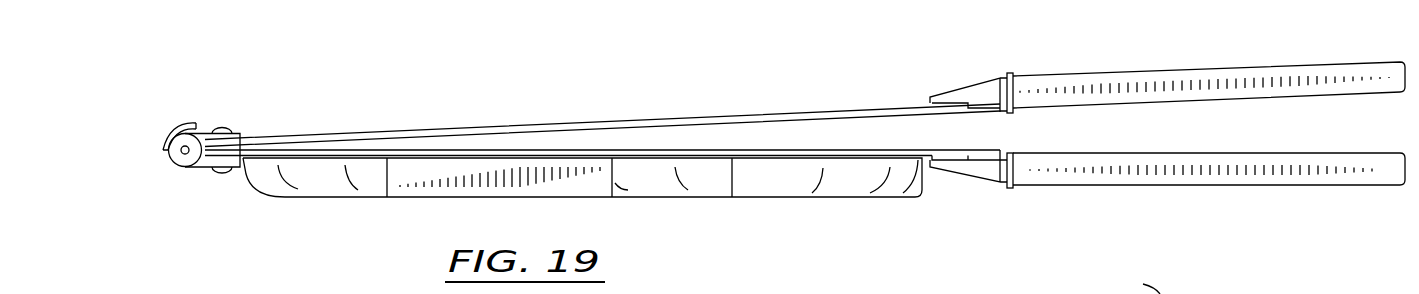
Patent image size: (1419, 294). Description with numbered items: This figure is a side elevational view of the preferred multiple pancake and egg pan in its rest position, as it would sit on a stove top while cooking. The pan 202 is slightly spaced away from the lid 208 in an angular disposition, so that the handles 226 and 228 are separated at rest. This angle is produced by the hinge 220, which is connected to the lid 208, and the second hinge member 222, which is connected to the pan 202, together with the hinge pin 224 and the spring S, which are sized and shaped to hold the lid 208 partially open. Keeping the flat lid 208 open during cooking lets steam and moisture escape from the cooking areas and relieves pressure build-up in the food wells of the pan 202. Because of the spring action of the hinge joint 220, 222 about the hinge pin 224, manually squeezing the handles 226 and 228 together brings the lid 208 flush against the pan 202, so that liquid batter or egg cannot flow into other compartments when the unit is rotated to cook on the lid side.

The pan 202 is at (733, 170).
The lid 208 is at (733, 113).
The hinge 220 is at (205, 131).
The second hinge member 222 is at (208, 170).
The pivot pin 224 is at (179, 152).
The handle 226 is at (1295, 61).
The handle 228 is at (1213, 184).
The spring S is at (172, 129).